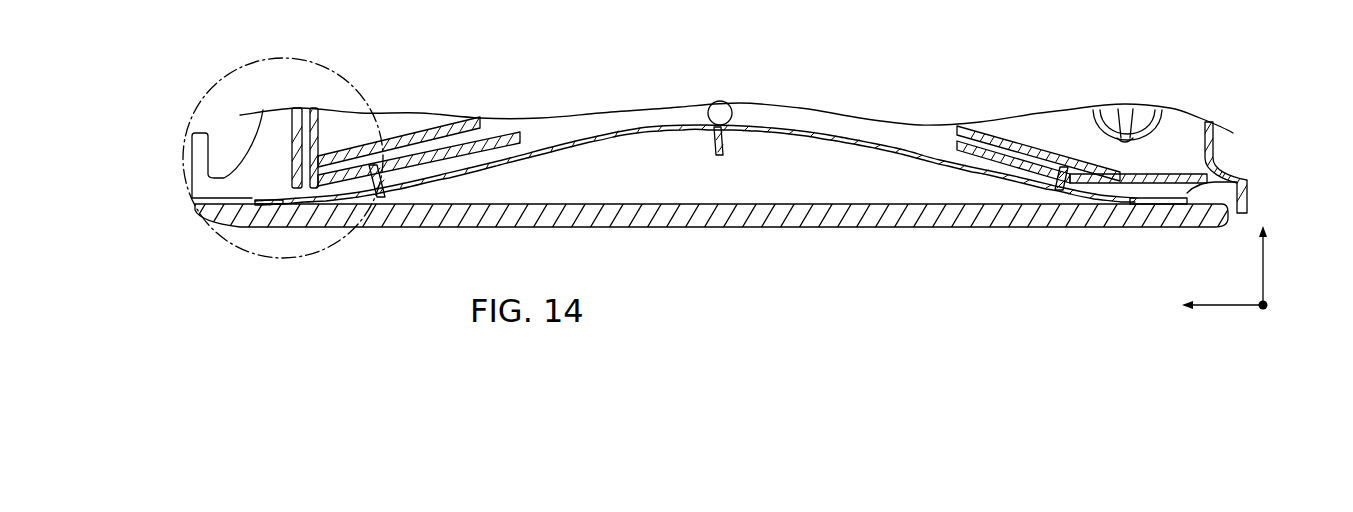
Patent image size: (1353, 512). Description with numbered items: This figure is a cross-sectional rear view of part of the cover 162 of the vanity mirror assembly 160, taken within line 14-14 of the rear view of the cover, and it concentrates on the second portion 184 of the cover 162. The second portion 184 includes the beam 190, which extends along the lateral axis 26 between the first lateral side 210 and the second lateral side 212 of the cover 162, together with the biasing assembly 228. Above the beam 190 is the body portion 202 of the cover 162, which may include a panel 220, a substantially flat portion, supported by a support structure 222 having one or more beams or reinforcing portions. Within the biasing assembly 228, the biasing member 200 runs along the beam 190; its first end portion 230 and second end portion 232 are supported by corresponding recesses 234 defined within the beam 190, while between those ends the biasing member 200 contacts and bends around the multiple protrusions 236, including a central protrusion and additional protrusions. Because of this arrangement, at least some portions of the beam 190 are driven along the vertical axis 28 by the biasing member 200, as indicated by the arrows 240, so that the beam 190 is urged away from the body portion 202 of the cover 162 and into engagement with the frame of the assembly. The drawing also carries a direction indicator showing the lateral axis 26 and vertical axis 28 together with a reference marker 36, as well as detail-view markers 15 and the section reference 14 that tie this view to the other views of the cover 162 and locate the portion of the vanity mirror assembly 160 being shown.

The line 14- 14 is at (701, 7).
The detail view region 15 is at (193, 227).
The lateral axis 26 is at (1243, 304).
The vertical axis 28 is at (1265, 276).
The reference origin 36 is at (1268, 310).
The vanity mirror assembly 160 is at (1213, 78).
The cover 162 is at (396, 74).
The second portion 184 is at (886, 252).
The beam 190 is at (940, 212).
The biasing member 200 is at (766, 134).
The body portion 202 is at (414, 106).
The first lateral side 210 is at (159, 103).
The second lateral side 212 is at (1265, 152).
The panel 220 is at (350, 158).
The support structure 222 is at (367, 130).
The biasing assembly 228 is at (830, 251).
The first end portion 230 is at (283, 207).
The second end portion 232 is at (1172, 207).
The recesses 234 is at (252, 203).
The multiple protrusions 236 is at (380, 170).
The arrows 240 is at (267, 196).